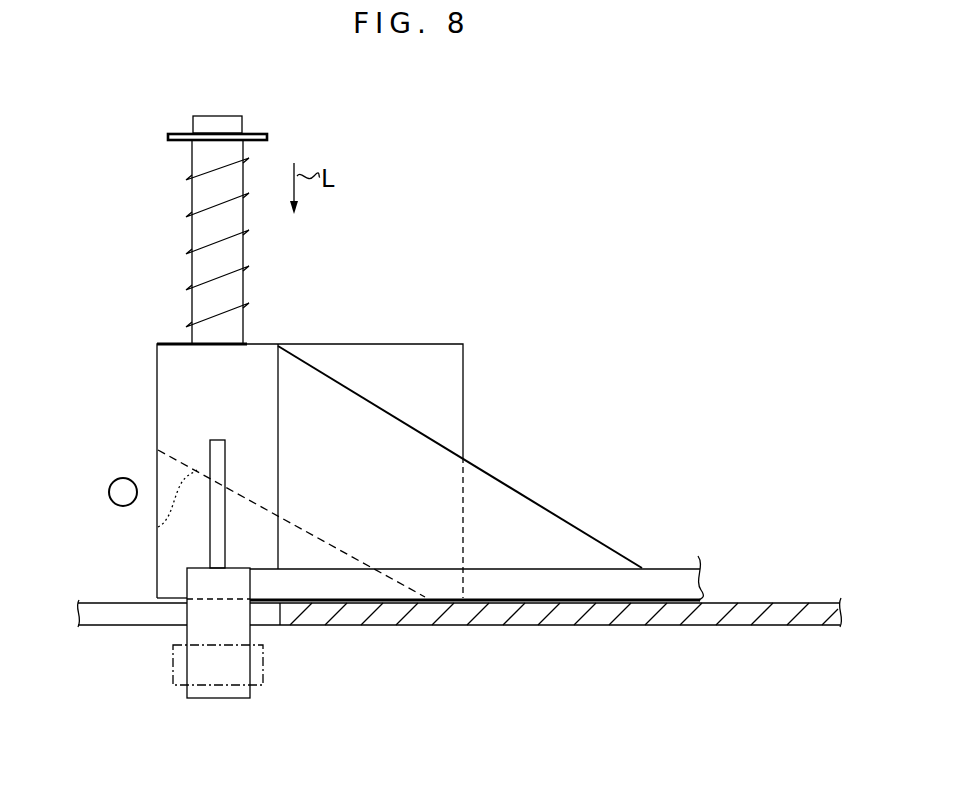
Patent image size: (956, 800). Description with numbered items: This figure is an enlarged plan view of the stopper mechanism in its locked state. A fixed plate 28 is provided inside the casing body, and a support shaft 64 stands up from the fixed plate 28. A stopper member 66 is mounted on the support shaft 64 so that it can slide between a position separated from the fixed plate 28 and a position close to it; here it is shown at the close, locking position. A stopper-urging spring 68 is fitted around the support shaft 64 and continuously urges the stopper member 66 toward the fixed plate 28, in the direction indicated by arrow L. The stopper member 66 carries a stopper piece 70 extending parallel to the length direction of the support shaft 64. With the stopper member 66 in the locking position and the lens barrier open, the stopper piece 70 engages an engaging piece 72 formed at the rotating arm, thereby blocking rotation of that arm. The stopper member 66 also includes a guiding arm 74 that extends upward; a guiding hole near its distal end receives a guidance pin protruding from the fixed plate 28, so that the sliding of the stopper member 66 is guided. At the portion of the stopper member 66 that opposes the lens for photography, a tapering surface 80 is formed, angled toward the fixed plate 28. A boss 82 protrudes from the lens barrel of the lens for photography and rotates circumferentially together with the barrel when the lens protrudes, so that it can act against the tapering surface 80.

The fixed plate 28 is at (773, 596).
The support shaft 64 is at (219, 116).
The stopper member 66 is at (401, 340).
The stopper-urging spring 68 is at (192, 178).
The stopper piece 70 is at (203, 700).
The engaging piece 72 is at (173, 672).
The guiding arm 74 is at (665, 576).
The tapering surface 80 is at (158, 527).
The boss 82 is at (109, 492).